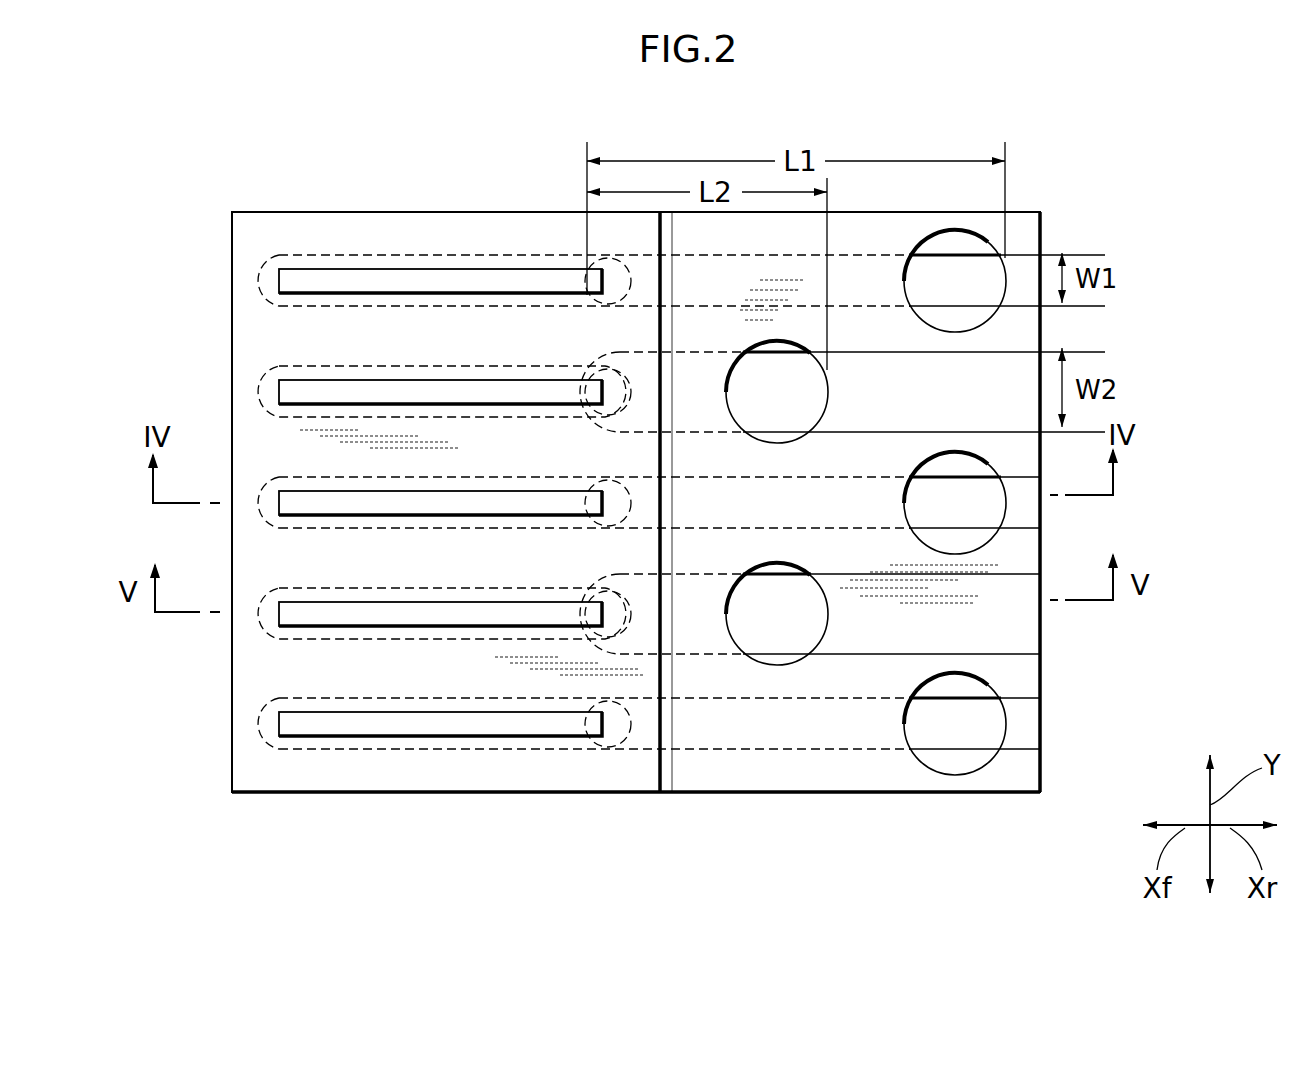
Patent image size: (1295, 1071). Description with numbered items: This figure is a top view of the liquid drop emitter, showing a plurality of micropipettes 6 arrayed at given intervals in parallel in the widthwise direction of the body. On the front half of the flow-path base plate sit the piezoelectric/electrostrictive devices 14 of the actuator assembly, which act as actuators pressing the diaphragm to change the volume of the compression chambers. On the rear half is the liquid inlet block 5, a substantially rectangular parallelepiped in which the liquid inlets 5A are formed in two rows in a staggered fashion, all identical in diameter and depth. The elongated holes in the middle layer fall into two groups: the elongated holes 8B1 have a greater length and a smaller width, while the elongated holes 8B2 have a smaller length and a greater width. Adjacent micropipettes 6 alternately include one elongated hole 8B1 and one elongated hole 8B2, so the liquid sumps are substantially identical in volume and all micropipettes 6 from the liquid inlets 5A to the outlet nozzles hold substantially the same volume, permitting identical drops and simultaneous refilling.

The liquid inlet block 5 is at (1025, 536).
The liquid inlets 5A is at (1003, 290).
The micropipettes 6 is at (250, 277).
The piezoelectric/electrostrictive devices 14 is at (468, 500).
The elongated holes 8B1 is at (752, 262).
The elongated holes 8B2 is at (688, 352).